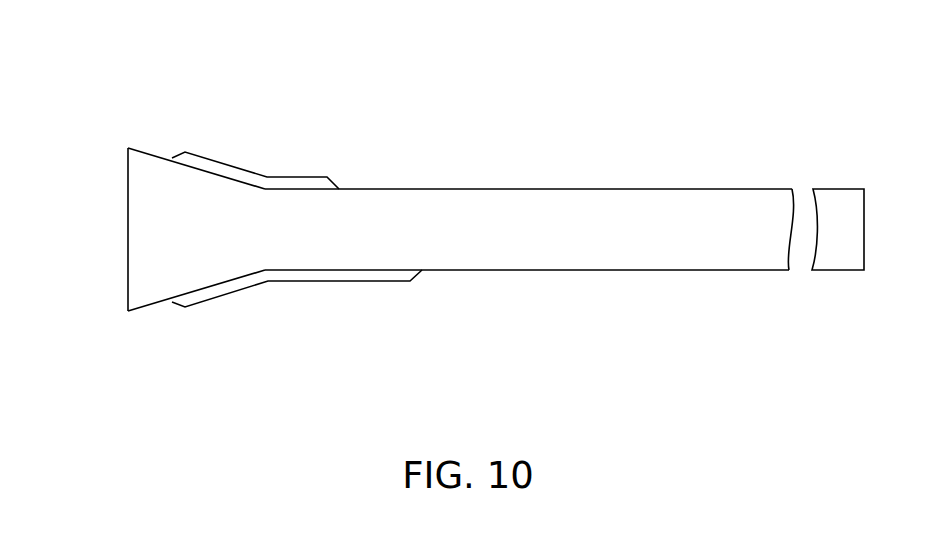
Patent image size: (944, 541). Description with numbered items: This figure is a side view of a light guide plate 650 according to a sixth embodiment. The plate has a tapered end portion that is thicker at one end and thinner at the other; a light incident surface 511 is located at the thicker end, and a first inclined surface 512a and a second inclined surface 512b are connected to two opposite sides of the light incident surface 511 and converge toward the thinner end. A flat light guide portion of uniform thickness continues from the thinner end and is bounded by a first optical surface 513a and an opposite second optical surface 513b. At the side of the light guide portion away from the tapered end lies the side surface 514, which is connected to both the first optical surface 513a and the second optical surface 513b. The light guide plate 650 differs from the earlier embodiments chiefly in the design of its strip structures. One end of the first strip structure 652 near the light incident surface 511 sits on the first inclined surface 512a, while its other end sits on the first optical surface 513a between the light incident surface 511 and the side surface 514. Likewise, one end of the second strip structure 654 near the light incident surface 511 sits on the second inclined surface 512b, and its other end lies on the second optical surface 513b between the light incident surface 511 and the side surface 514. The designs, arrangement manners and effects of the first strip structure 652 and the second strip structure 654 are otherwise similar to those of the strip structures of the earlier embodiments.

The light guide plate 650 is at (49, 29).
The light incident surface 511 is at (126, 228).
The first inclined surface 512a is at (150, 147).
The second inclined surface 512b is at (147, 311).
The first optical surface 513a is at (687, 189).
The second optical surface 513b is at (687, 270).
The side surface 514 is at (864, 213).
The first strip structure 652 is at (300, 177).
The second strip structure 654 is at (300, 281).